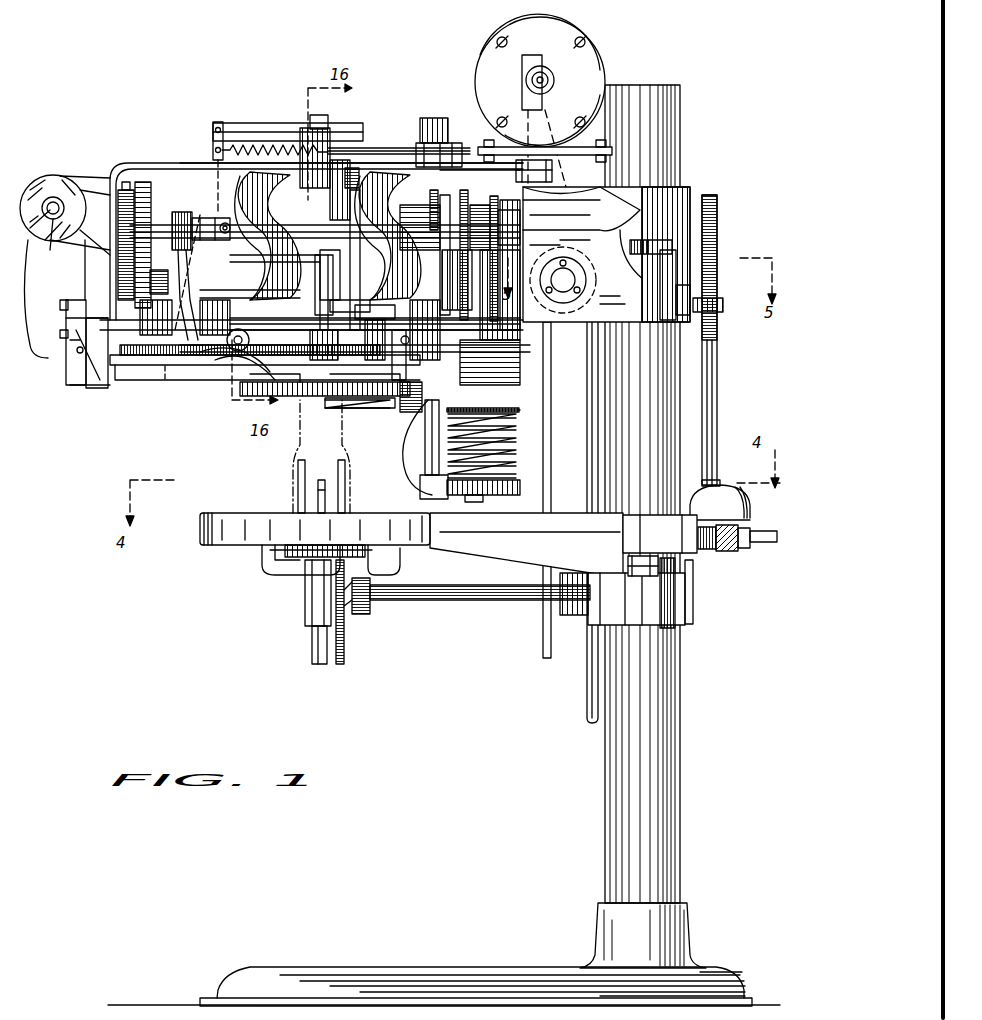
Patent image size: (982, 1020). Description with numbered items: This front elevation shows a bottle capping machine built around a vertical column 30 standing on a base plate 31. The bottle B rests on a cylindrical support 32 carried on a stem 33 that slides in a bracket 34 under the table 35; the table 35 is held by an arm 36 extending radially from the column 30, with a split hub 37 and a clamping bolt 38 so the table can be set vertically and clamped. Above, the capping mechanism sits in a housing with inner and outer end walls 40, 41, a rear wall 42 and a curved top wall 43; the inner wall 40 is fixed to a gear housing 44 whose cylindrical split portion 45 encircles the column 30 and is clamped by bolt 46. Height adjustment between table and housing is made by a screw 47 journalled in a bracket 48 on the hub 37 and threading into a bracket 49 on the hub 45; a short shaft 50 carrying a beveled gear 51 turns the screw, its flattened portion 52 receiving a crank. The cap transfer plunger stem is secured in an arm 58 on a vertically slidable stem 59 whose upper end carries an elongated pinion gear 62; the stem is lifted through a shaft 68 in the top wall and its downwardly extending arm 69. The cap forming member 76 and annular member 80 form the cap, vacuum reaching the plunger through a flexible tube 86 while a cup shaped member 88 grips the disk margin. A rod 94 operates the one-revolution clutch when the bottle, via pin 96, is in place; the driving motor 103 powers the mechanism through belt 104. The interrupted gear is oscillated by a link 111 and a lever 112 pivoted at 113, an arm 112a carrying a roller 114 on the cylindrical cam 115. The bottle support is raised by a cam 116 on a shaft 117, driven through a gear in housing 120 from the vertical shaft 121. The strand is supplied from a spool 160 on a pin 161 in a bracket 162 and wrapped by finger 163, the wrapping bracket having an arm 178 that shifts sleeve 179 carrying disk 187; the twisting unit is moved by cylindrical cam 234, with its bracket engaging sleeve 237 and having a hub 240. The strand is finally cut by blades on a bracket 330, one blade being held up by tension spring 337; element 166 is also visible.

The column 30 is at (612, 780).
The base plate 31 is at (490, 975).
The cylindrical support 32 is at (265, 562).
The stem 33 is at (312, 652).
The bracket 34 is at (310, 602).
The table 35 is at (220, 546).
The arm 36 is at (520, 550).
The split hub 37 is at (690, 608).
The clamping bolt 38 is at (672, 592).
The inner end wall 40 is at (548, 312).
The outer end wall 41 is at (104, 242).
The rear wall 42 is at (325, 212).
The curved top wall 43 is at (160, 164).
The gear housing 44 is at (596, 270).
The cylindrical split portion 45 is at (690, 194).
The clamping bolt 46 is at (664, 296).
The screw 47 is at (716, 378).
The bracket 48 is at (748, 506).
The bracket 49 is at (724, 305).
The short shaft 50 is at (710, 548).
The beveled gear 51 is at (724, 551).
The flattened portion 52 is at (765, 542).
The arm 58 is at (510, 496).
The stem 59 is at (425, 452).
The elongated pinion gear 62 is at (444, 118).
The shaft 68 is at (396, 148).
The arm 69 is at (353, 245).
The cap forming member 76 is at (296, 392).
The annular member 80 is at (376, 406).
The flexible tube 86 is at (404, 476).
The cup shaped member 88 is at (512, 437).
The rod 94 is at (548, 437).
The pin 96 is at (320, 478).
The driving motor 103 is at (592, 68).
The belt 104 is at (572, 176).
The link 111 is at (275, 132).
The lever 112 is at (213, 140).
The arm 112a is at (200, 340).
The pivot 113 is at (250, 338).
The roller 114 is at (228, 222).
The cylindrical cam 115 is at (280, 184).
The cam 116 is at (366, 606).
The shaft 117 is at (458, 592).
The housing 120 is at (576, 616).
The shaft 121 is at (590, 482).
The spool 160 is at (62, 178).
The pin 161 is at (54, 242).
The bracket 162 is at (64, 208).
The finger 163 is at (226, 360).
The lever bracket 166 is at (138, 345).
The arm 178 is at (176, 278).
The sleeve 179 is at (160, 222).
The disk 187 is at (134, 190).
The cylindrical cam 234 is at (400, 198).
The sleeve 237 is at (476, 216).
The hub 240 is at (418, 412).
The bracket 330 is at (326, 308).
The tension spring 337 is at (395, 335).
The bottle B is at (338, 432).